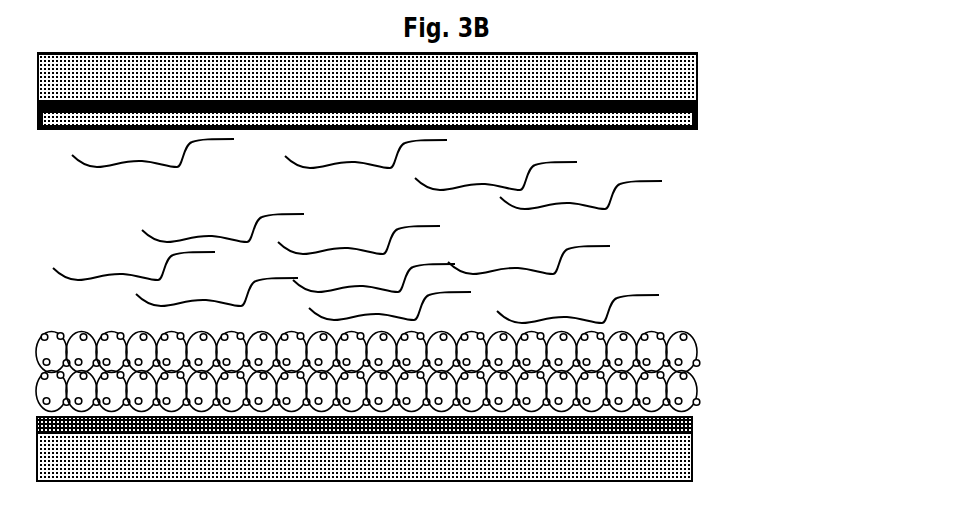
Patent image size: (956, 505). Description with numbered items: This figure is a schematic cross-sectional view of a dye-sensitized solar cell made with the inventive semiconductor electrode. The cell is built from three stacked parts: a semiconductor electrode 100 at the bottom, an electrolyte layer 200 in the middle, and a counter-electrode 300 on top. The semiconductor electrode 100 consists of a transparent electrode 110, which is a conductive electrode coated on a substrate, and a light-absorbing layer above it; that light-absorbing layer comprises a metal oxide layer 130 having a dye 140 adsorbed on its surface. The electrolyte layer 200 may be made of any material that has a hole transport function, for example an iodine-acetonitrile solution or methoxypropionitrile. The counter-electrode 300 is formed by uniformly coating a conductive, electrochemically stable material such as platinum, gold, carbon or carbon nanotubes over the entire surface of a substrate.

The counter-electrode 300 is at (720, 54).
The electrolyte layer 200 is at (720, 335).
The semiconductor electrode 100 is at (448, 407).
The dye 140 is at (692, 360).
The metal oxide layer 130 is at (697, 386).
The transparent electrode 110 is at (408, 449).